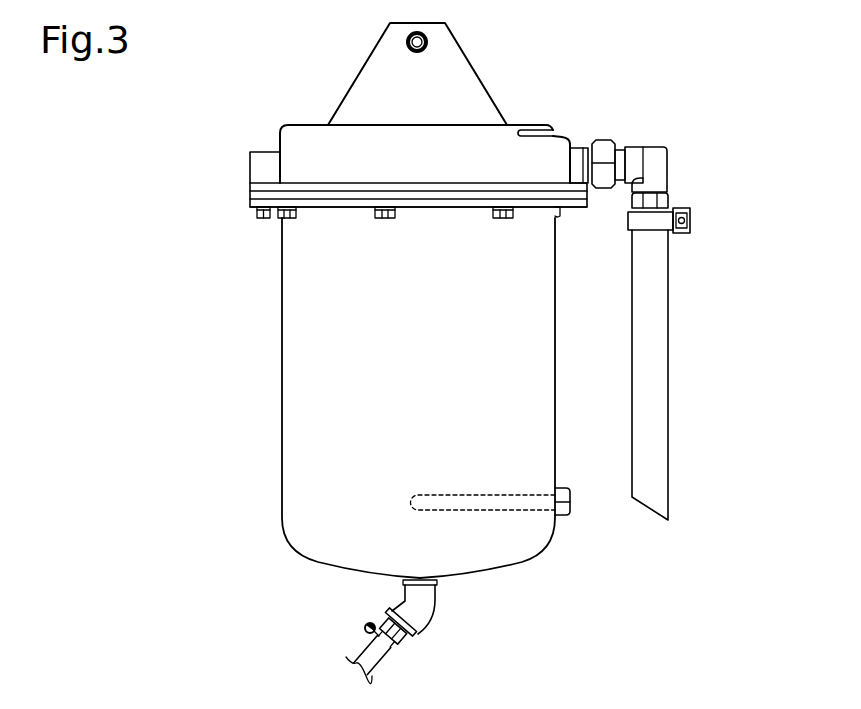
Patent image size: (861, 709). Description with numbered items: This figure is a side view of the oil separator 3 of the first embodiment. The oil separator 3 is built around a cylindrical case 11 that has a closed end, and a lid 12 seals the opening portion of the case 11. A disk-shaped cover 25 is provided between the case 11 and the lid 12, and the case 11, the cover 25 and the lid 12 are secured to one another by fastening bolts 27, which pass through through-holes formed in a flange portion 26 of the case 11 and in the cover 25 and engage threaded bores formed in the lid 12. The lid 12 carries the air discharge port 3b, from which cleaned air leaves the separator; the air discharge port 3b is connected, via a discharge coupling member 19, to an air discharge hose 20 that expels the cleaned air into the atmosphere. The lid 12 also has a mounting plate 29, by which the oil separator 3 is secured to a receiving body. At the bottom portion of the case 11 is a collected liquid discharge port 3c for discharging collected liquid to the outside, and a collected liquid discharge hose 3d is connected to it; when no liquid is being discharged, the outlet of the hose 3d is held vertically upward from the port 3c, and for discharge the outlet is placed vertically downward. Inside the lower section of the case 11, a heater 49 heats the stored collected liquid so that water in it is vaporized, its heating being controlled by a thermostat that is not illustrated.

The oil separator 3 is at (597, 68).
The air discharge port 3b is at (570, 140).
The collected liquid discharge port 3c is at (433, 612).
The collected liquid discharge hose 3d is at (375, 668).
The case 11 is at (555, 345).
The lid 12 is at (303, 125).
The discharge coupling member 19 is at (667, 148).
The air discharge hose 20 is at (668, 378).
The cover 25 is at (250, 196).
The flange portion 26 is at (256, 213).
The fastening bolt 27 is at (266, 219).
The mounting plate 29 is at (470, 62).
The heater 49 is at (478, 495).